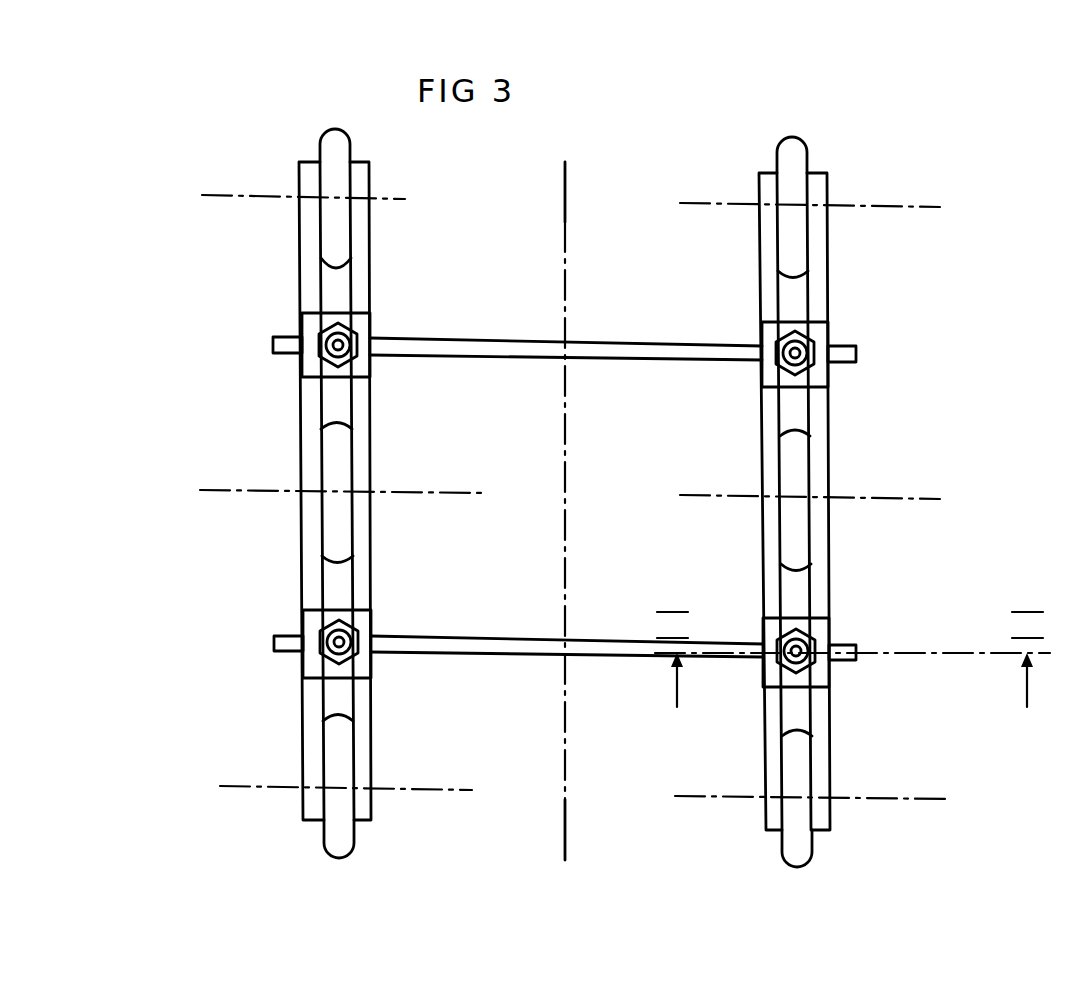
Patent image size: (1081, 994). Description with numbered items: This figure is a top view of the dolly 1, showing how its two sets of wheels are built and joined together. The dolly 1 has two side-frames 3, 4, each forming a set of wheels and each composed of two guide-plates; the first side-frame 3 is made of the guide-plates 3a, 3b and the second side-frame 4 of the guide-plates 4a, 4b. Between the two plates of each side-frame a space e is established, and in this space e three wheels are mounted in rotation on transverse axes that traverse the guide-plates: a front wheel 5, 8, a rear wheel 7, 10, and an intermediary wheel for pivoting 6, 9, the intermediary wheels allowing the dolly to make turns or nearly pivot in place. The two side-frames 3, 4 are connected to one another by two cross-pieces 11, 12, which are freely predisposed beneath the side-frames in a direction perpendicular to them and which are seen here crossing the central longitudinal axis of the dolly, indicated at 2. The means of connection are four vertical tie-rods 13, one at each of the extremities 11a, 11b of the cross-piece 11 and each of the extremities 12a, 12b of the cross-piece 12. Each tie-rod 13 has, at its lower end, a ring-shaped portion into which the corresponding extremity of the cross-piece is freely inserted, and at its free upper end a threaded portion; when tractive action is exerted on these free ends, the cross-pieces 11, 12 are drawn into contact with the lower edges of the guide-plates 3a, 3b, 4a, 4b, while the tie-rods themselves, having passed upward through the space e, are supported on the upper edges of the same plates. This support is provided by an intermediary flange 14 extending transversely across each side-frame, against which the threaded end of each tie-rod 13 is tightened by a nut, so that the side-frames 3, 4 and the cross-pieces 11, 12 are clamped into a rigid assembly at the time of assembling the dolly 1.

The dolly 1 is at (650, 124).
The central axis / plane of symmetry 2 is at (551, 511).
The side-frame 3 is at (313, 491).
The guide-plate 3a is at (308, 272).
The guide-plate 3b is at (363, 273).
The side-frame 4 is at (838, 501).
The guide-plate 4a is at (767, 292).
The guide-plate 4b is at (820, 298).
The front wheel 5 is at (338, 827).
The intermediary wheel for pivoting 6 is at (333, 445).
The rear wheel 7 is at (328, 143).
The front wheel 8 is at (797, 840).
The intermediary wheel for pivoting 9 is at (797, 542).
The rear wheel 10 is at (795, 152).
The cross-piece 11 is at (566, 650).
The extremity of cross-piece 11a is at (288, 641).
The extremity of cross-piece 11b is at (838, 653).
The cross-piece 12 is at (580, 337).
The extremity of cross-piece 12a is at (287, 343).
The extremity of cross-piece 12b is at (840, 353).
The vertical tie-rod 13 is at (349, 350).
The intermediary flange 14 is at (308, 366).
The space e is at (338, 288).